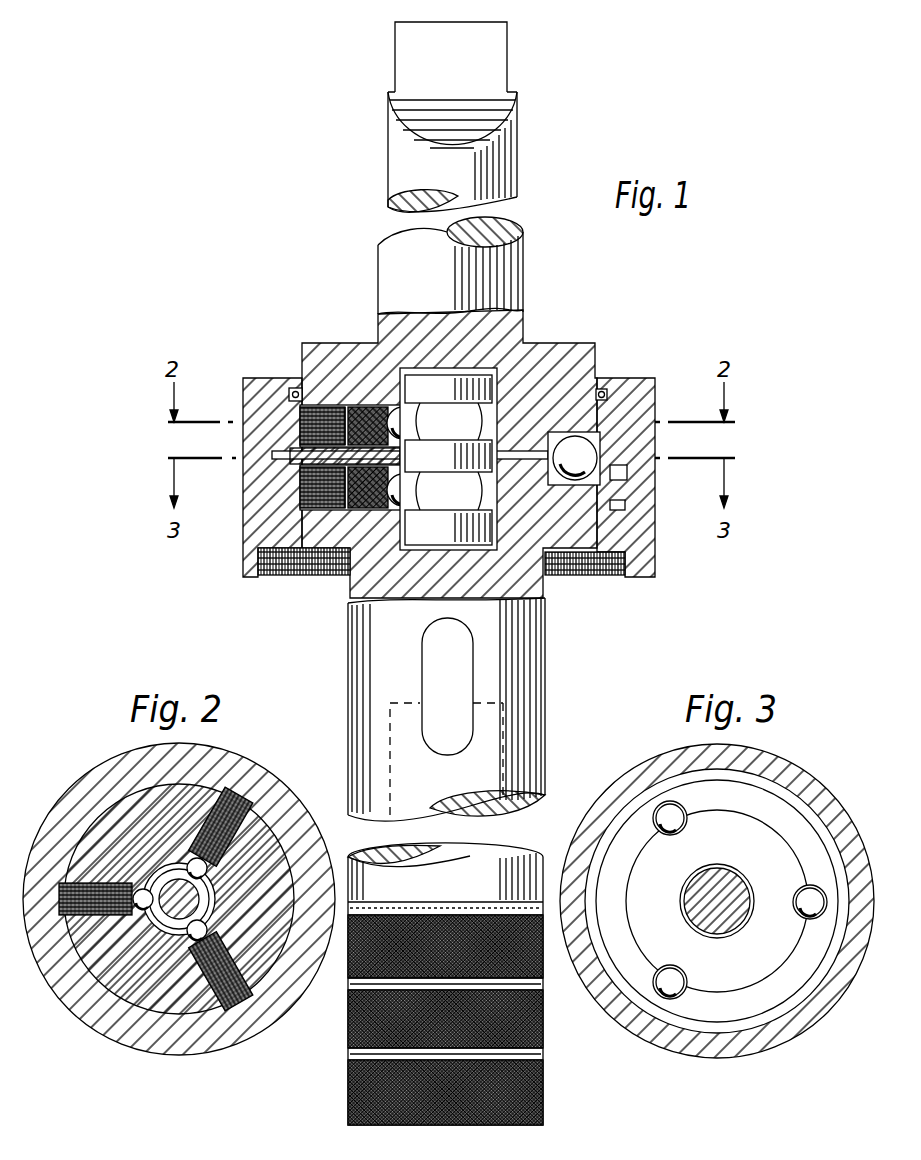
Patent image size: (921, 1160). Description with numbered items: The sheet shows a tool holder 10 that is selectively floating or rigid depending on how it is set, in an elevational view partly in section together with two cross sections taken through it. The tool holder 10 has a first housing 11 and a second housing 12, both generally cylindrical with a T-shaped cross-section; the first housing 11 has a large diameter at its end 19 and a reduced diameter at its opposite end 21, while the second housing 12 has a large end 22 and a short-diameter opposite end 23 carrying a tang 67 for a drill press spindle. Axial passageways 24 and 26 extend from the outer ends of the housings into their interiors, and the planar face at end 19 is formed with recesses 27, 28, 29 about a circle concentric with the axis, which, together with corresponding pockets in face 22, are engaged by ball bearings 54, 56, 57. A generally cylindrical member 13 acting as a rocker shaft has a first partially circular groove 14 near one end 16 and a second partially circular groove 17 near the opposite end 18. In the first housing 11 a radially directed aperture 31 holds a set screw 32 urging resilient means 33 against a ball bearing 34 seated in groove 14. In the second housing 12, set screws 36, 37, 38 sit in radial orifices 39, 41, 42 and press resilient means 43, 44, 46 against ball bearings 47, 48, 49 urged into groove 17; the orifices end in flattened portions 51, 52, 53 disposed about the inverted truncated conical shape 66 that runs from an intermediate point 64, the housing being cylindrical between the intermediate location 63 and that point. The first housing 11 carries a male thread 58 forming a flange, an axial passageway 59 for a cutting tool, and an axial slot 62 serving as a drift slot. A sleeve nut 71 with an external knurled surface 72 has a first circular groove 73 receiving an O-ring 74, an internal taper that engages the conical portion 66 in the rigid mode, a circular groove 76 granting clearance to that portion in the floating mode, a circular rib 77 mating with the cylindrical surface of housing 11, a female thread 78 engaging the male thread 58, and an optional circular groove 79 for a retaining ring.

In FIG. 1, the tool holder 10 is at (590, 334).
In FIG. 1, the first housing 11 is at (546, 646).
In FIG. 3, the first housing 11 is at (757, 970).
In FIG. 1, the second housing 12 is at (524, 268).
In FIG. 2, the second housing 12 is at (254, 915).
In FIG. 1, the member 13 is at (437, 435).
In FIG. 2, the member 13 is at (212, 904).
In FIG. 3, the member 13 is at (690, 894).
In FIG. 1, the first partially circular groove 14 is at (480, 490).
In FIG. 1, the one end 16 is at (497, 540).
In FIG. 1, the second partially circular groove 17 is at (480, 421).
In FIG. 1, the opposite end 18 is at (497, 380).
In FIG. 1, the end of housing 11 19 is at (612, 470).
In FIG. 3, the end of housing 11 19 is at (772, 818).
In FIG. 1, the opposite end of housing 11 21 is at (545, 1074).
In FIG. 1, the end of housing 12 22 is at (645, 452).
In FIG. 1, the opposite end of housing 12 23 is at (518, 102).
In FIG. 1, the axial passageway 24 is at (497, 514).
In FIG. 1, the axial passageway 26 is at (497, 398).
In FIG. 3, the recess 27 is at (664, 832).
In FIG. 1, the recess 28 is at (600, 440).
In FIG. 3, the recess 28 is at (804, 892).
In FIG. 3, the recess 29 is at (682, 974).
In FIG. 1, the radially directed aperture 31 is at (342, 490).
In FIG. 1, the set screw 32 is at (310, 510).
In FIG. 1, the resilient means 33 is at (372, 514).
In FIG. 1, the ball bearing 34 is at (392, 500).
In FIG. 2, the set screw 36 is at (214, 830).
In FIG. 2, the set screw 37 is at (240, 978).
In FIG. 1, the set screw 38 is at (328, 407).
In FIG. 2, the set screw 38 is at (82, 884).
In FIG. 2, the radial orifice 39 is at (187, 866).
In FIG. 2, the radial orifice 41 is at (208, 931).
In FIG. 1, the radial orifice 42 is at (346, 405).
In FIG. 2, the radial orifice 42 is at (136, 884).
In FIG. 2, the resilient means 43 is at (216, 866).
In FIG. 2, the resilient means 44 is at (196, 960).
In FIG. 1, the resilient means 46 is at (365, 407).
In FIG. 2, the resilient means 46 is at (116, 914).
In FIG. 2, the ball bearing 47 is at (208, 871).
In FIG. 2, the ball bearing 48 is at (178, 935).
In FIG. 1, the ball bearing 49 is at (394, 409).
In FIG. 2, the ball bearing 49 is at (142, 910).
In FIG. 2, the flattened portion 51 is at (232, 802).
In FIG. 2, the flattened portion 52 is at (226, 1002).
In FIG. 1, the flattened portion 53 is at (272, 477).
In FIG. 2, the flattened portion 53 is at (62, 906).
In FIG. 3, the ball bearing 54 is at (684, 822).
In FIG. 1, the ball bearing 56 is at (590, 452).
In FIG. 3, the ball bearing 56 is at (800, 908).
In FIG. 3, the ball bearing 57 is at (670, 968).
In FIG. 1, the male thread 58 is at (599, 539).
In FIG. 1, the axial passageway 59 is at (473, 806).
In FIG. 1, the axial slot 62 is at (436, 672).
In FIG. 1, the intermediate location 63 is at (526, 344).
In FIG. 1, the intermediate point 64 is at (291, 388).
In FIG. 1, the inverted truncated conical shape 66 is at (584, 422).
In FIG. 1, the tang 67 is at (500, 40).
In FIG. 1, the sleeve nut 71 is at (243, 552).
In FIG. 2, the sleeve nut 71 is at (288, 802).
In FIG. 3, the sleeve nut 71 is at (814, 794).
In FIG. 1, the external knurled surface 72 is at (243, 412).
In FIG. 1, the first circular groove 73 is at (640, 381).
In FIG. 1, the O-ring 74 is at (604, 389).
In FIG. 1, the circular groove 76 is at (655, 474).
In FIG. 1, the circular rib 77 is at (608, 496).
In FIG. 1, the female thread 78 is at (651, 539).
In FIG. 1, the circular groove 79 is at (622, 577).
In FIG. 3, the circular groove 79 is at (746, 867).